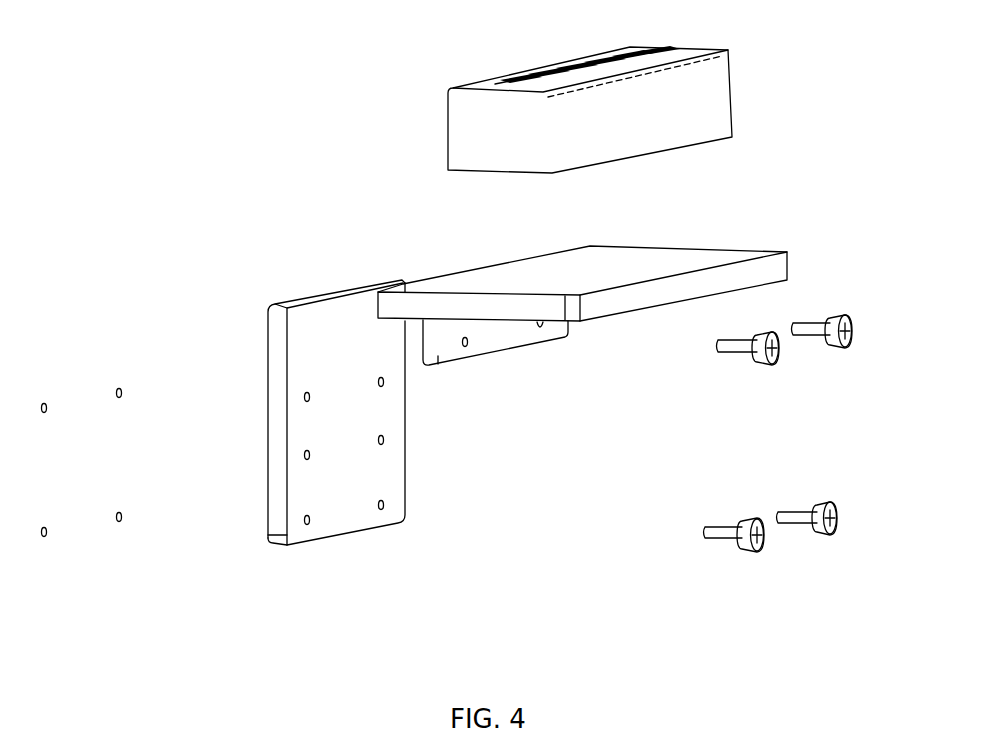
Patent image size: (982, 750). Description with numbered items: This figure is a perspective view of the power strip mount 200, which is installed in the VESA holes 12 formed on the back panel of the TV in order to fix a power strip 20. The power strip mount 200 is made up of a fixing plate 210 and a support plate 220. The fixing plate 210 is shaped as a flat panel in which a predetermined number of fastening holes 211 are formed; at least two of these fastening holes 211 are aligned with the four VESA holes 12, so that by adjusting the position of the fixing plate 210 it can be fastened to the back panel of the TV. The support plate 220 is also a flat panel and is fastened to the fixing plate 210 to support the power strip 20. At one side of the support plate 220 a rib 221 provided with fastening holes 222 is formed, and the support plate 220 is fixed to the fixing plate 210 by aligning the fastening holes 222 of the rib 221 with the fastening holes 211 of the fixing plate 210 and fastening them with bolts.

The VESA holes 12 is at (118, 522).
The power strip 20 is at (723, 77).
The power strip mount 200 is at (262, 123).
The fixing plate 210 is at (292, 398).
The fastening holes 211 is at (377, 382).
The support plate 220 is at (703, 256).
The rib 221 is at (517, 344).
The fastening holes 222 is at (465, 350).